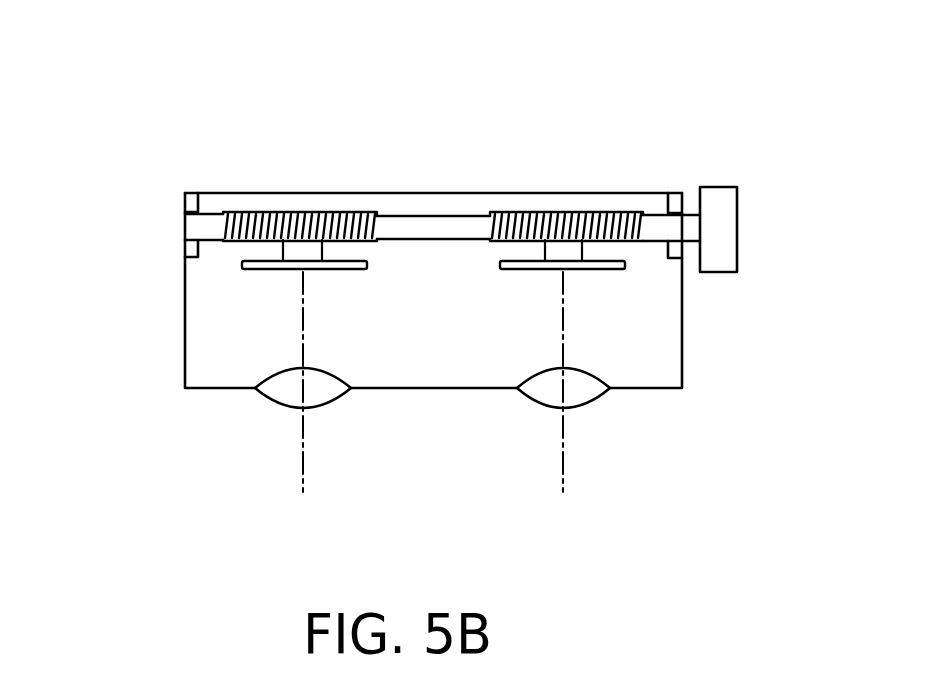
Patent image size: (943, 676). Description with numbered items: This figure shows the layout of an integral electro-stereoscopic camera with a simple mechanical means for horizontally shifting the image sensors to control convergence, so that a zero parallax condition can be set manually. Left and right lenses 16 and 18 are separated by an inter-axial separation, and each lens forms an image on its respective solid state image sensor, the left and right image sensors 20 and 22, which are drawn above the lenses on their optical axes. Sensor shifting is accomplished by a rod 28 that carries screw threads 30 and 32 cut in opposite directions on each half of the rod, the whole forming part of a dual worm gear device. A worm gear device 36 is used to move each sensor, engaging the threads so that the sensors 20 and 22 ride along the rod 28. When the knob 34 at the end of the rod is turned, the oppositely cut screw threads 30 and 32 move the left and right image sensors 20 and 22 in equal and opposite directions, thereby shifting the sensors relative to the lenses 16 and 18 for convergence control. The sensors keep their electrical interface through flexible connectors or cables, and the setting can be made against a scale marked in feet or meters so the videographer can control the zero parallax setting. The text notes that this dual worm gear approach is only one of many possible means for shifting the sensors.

The left lens 16 is at (590, 407).
The right lens 18 is at (267, 400).
The solid state image sensor 20 is at (627, 268).
The solid state image sensor 22 is at (242, 265).
The rod 28 is at (442, 128).
The screw thread 30 is at (577, 212).
The screw thread 32 is at (298, 212).
The knob 34 is at (730, 195).
The worm gear device 36 is at (322, 247).